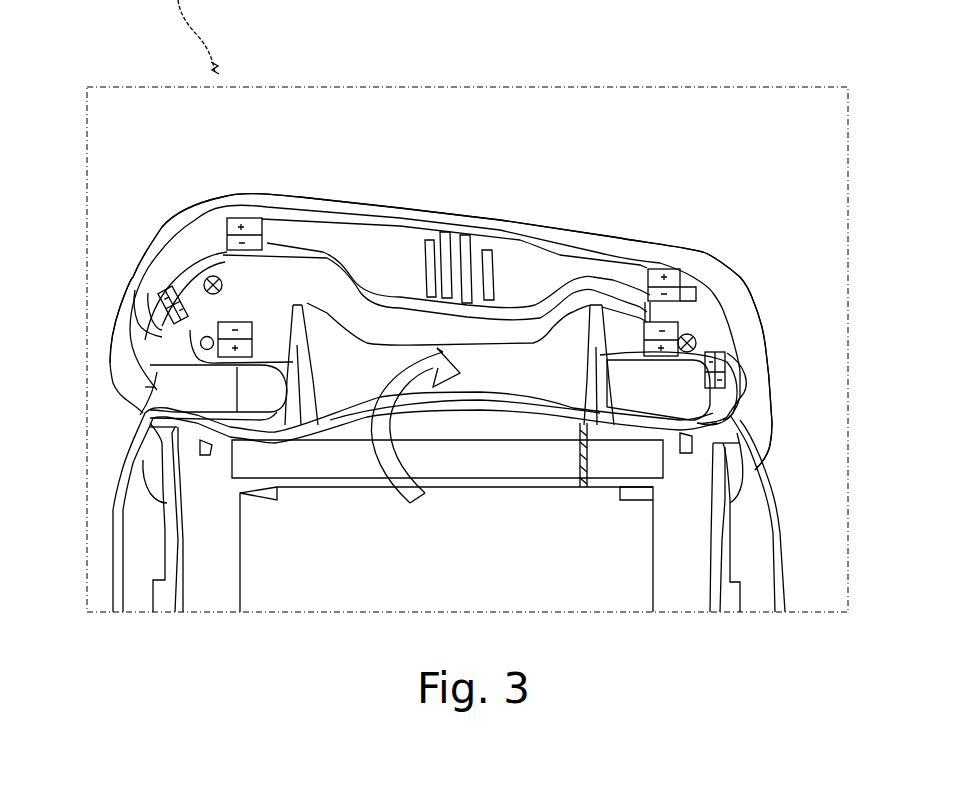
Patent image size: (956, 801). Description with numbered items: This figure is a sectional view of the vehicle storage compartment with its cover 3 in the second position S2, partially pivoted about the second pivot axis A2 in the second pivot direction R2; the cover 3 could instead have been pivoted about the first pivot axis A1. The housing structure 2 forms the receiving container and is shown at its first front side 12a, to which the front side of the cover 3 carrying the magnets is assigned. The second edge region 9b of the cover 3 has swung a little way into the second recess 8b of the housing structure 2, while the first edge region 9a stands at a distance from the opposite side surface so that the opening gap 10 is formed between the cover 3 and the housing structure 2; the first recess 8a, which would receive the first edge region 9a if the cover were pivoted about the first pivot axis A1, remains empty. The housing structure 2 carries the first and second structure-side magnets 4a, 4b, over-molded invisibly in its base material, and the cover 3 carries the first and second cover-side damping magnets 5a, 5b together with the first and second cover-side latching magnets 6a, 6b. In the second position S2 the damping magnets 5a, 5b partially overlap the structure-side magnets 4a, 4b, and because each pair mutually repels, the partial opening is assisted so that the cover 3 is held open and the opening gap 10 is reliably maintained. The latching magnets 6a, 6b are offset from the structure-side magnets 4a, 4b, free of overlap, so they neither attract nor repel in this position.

The housing structure 2 is at (553, 383).
The cover 3 is at (408, 207).
The second position S2 is at (441, 332).
The first structure-side magnet 4a is at (247, 330).
The second structure-side magnet 4b is at (653, 343).
The first cover-side damping magnet 5a is at (253, 227).
The second cover-side damping magnet 5b is at (653, 277).
The first cover-side latching magnet 6a is at (172, 287).
The second cover-side latching magnet 6b is at (727, 367).
The first recess 8a is at (243, 393).
The second recess 8b is at (665, 380).
The first edge region 9a is at (140, 390).
The second edge region 9b is at (747, 410).
The opening gap 10 is at (147, 350).
The first front side 12a is at (367, 374).
The first pivot axis A1 is at (210, 280).
The second pivot axis A2 is at (693, 327).
The second pivot direction R2 is at (415, 446).